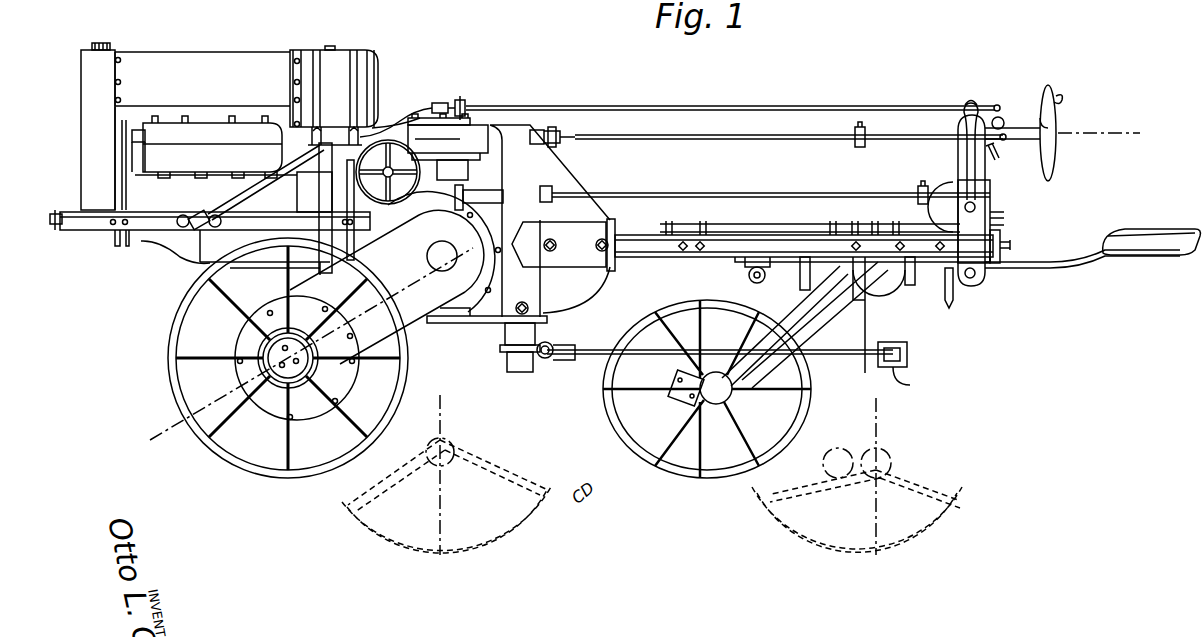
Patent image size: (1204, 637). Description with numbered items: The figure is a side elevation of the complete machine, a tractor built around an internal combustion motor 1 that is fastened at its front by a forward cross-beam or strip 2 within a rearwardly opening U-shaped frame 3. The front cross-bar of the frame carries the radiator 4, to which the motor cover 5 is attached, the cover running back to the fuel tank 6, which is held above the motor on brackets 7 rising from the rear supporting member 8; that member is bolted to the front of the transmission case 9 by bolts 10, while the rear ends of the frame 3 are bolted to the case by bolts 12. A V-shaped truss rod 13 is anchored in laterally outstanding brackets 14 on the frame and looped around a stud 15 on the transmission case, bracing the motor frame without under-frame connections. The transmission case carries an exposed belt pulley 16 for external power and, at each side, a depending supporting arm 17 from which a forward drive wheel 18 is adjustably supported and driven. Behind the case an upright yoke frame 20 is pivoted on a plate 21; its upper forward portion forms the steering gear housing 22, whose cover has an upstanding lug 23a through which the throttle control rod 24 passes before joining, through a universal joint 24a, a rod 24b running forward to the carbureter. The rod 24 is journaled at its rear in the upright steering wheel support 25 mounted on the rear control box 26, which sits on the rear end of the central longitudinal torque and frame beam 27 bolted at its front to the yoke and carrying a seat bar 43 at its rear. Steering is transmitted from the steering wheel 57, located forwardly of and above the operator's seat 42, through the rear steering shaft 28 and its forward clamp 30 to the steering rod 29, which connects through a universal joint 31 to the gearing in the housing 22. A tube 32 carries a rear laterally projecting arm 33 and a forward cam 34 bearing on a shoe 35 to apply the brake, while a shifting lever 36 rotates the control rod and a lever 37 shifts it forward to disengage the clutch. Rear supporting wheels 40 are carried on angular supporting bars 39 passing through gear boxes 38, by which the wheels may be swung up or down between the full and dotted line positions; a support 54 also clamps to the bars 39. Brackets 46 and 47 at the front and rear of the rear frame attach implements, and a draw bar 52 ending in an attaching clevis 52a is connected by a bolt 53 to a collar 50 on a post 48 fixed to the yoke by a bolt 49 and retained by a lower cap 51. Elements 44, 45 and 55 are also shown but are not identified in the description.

The internal combustion motor 1 is at (143, 243).
The forward cross-beam or strip 2 is at (114, 238).
The rearwardly opening U-shaped frame 3 is at (63, 232).
The radiator 4 is at (80, 152).
The motor cover 5 is at (225, 52).
The fuel tank 6 is at (340, 50).
The brackets 7 is at (448, 245).
The rear supporting member 8 is at (340, 270).
The transmission case 9 is at (470, 170).
The bolts 10 is at (318, 268).
The bolts 12 is at (350, 220).
The truss rod 13 is at (260, 186).
The laterally outstanding brackets 14 is at (198, 214).
The stud 15 is at (400, 130).
The belt pulley 16 is at (393, 203).
The drive wheel supporting arm or frame 17 is at (410, 335).
The forward drive wheels 18 is at (255, 470).
The upright yoke frame 20 is at (573, 280).
The plate 21 is at (453, 324).
The steering gear housing 22 is at (403, 124).
The upstanding lug 23a is at (466, 104).
The throttle control rod 24 is at (603, 104).
The universal joint 24a is at (445, 100).
The rod 24b is at (434, 102).
The upright steering wheel support 25 is at (958, 156).
The rear control box 26 is at (992, 200).
The central longitudinal torque and frame beam 27 is at (645, 268).
The rear steering shaft 28 is at (886, 141).
The steering rod 29 is at (722, 141).
The forward clamp 30 is at (856, 148).
The universal joint 31 is at (566, 146).
The tube 32 is at (778, 192).
The laterally projecting arm 33 is at (920, 201).
The cam 34 is at (492, 200).
The shoe 35 is at (470, 205).
The shifting lever 36 is at (962, 105).
The lever 37 is at (998, 162).
The gear box 38 is at (797, 272).
The angular supporting bars 39 is at (735, 350).
The rear supporting wheels 40 is at (672, 478).
The operator's seat 42 is at (1147, 228).
The seat bar 43 is at (1040, 273).
The adjusting bolt 44 is at (1012, 245).
The lever bracket 45 is at (1001, 232).
The brackets 46 is at (748, 273).
The brackets 47 is at (975, 280).
The post 48 is at (550, 344).
The bolt 49 is at (521, 302).
The collar 50 is at (500, 352).
The lower cap 51 is at (520, 375).
The draw bar 52 is at (575, 360).
The attaching clevis 52a is at (923, 381).
The bolt 53 is at (562, 352).
The support 54 is at (868, 333).
The pin 55 is at (950, 308).
The steering wheel 57 is at (1060, 167).